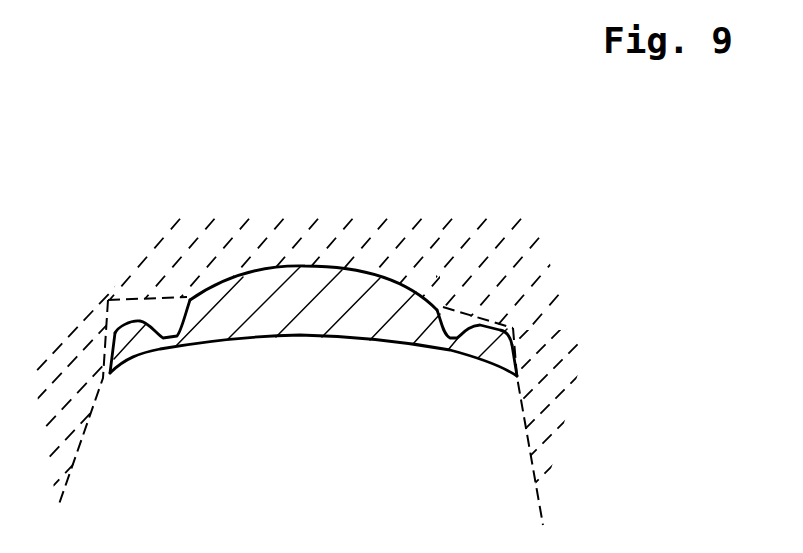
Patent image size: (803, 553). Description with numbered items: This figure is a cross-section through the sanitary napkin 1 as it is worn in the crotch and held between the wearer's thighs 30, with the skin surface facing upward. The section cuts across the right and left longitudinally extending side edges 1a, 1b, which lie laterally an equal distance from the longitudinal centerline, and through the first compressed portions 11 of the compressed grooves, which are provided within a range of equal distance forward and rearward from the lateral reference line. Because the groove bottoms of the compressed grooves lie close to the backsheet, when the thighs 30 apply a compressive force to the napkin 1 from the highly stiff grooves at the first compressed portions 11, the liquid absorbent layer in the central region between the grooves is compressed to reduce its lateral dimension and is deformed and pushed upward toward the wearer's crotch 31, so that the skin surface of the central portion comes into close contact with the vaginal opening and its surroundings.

The sanitary napkin 1 is at (296, 338).
The side edge 1a is at (517, 377).
The side edge 1b is at (112, 376).
The first compressed portion 11 is at (168, 330).
The thigh 30 is at (85, 447).
The crotch 31 is at (280, 267).